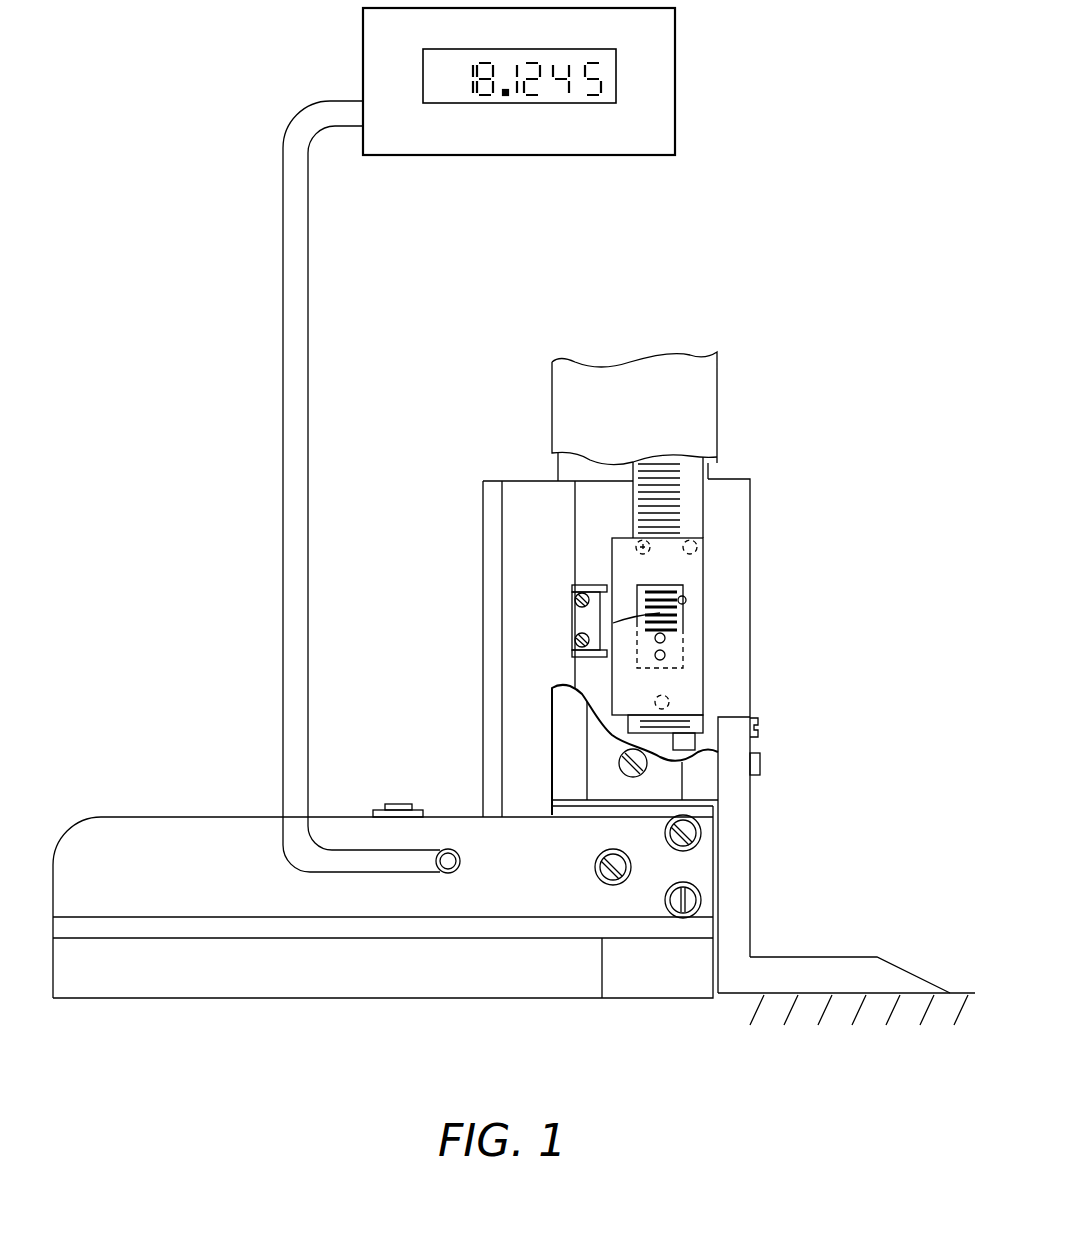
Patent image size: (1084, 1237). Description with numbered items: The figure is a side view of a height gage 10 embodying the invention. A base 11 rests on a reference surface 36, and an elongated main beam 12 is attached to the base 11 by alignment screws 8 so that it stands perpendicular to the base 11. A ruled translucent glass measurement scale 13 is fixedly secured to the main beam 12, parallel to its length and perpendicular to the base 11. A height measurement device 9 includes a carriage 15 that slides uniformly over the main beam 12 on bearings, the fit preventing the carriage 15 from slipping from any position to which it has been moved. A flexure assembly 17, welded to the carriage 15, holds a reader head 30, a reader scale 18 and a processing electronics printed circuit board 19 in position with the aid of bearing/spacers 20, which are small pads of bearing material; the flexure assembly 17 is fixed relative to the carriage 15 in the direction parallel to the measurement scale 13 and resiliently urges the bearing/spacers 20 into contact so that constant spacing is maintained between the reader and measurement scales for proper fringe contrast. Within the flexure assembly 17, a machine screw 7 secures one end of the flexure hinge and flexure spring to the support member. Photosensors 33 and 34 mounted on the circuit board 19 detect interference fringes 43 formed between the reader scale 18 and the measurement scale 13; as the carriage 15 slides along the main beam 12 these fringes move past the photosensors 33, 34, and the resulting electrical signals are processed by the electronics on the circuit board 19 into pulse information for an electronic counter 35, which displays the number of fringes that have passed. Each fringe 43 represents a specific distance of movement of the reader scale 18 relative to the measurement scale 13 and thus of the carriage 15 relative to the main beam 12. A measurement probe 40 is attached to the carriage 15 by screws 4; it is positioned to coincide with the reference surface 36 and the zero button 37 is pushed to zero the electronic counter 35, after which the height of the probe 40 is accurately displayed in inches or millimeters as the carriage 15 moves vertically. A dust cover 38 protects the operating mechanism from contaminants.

The screws 4 is at (760, 725).
The machine screw 7 is at (574, 600).
The alignment screws 8 is at (632, 868).
The height measurement device 9 is at (470, 641).
The height gage 10 is at (753, 416).
The base 11 is at (160, 825).
The main beam 12 is at (570, 465).
The measurement scale 13 is at (690, 492).
The carriage 15 is at (488, 512).
The flexure assembly 17 is at (578, 626).
The reader scale 18 is at (686, 599).
The printed circuit board 19 is at (690, 695).
The bearing/spacers 20 is at (637, 545).
The reader head 30 is at (690, 578).
The photosensor 33 is at (666, 638).
The photosensor 34 is at (666, 655).
The electronic counter 35 is at (665, 88).
The reference surface 36 is at (957, 992).
The zero button 37 is at (397, 804).
The dust cover 38 is at (705, 386).
The measurement probe 40 is at (835, 968).
The interference fringes 43 is at (660, 613).